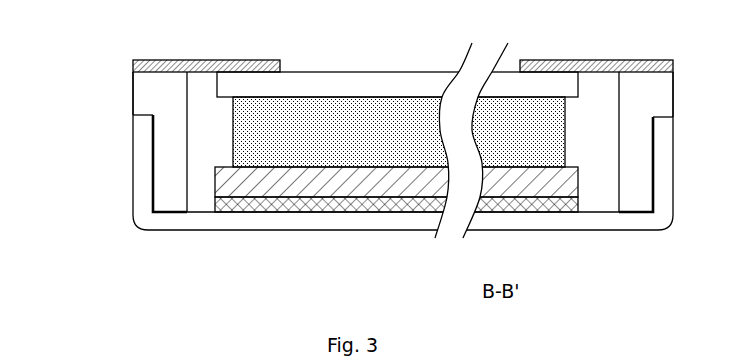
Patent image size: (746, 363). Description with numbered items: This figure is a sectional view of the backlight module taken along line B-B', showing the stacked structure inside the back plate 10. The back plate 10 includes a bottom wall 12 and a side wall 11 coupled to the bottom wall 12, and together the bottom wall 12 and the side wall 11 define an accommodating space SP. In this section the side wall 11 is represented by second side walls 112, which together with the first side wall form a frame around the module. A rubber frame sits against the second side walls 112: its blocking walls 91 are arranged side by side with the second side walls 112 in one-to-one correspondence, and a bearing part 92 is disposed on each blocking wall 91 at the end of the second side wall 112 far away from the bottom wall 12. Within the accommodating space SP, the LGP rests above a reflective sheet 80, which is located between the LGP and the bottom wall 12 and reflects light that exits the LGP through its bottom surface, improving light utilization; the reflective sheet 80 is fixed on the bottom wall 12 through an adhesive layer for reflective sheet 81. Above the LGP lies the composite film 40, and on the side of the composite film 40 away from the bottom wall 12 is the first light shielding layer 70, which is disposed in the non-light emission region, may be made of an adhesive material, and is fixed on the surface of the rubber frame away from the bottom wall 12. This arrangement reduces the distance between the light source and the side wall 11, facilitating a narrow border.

The back plate 10 is at (70, 172).
The side wall 11 is at (369, 142).
The second side wall 112 is at (133, 180).
The bottom wall 12 is at (223, 232).
The composite film 40 is at (307, 90).
The first light shielding layer 70 is at (215, 60).
The reflective sheet 80 is at (362, 177).
The adhesive layer for reflective sheet 81 is at (403, 200).
The blocking wall 91 is at (165, 138).
The bearing part 92 is at (150, 97).
The accommodating space SP is at (203, 118).
The light guide plate LGP is at (528, 122).